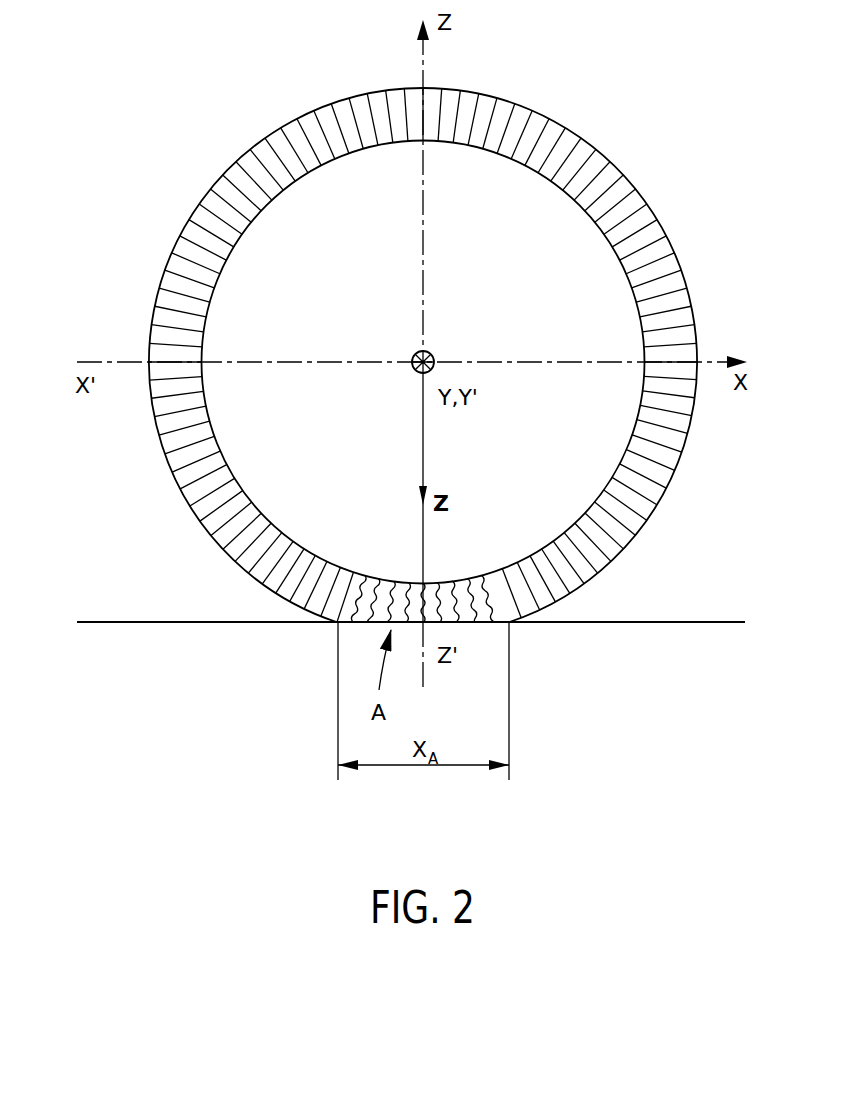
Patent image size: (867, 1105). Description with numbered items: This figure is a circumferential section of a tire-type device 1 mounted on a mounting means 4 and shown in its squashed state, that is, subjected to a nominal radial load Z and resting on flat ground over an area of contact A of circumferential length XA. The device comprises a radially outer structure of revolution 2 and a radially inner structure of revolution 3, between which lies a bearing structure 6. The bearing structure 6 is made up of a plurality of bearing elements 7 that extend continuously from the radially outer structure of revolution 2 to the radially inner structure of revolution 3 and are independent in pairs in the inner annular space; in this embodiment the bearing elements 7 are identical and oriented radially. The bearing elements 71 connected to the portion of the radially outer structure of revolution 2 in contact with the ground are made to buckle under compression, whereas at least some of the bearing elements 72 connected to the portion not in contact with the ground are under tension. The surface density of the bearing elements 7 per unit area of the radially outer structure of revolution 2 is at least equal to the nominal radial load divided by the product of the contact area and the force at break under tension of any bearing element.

The tire-type device 1 is at (173, 142).
The radially outer structure of revolution 2 is at (568, 127).
The radially inner structure of revolution 3 is at (585, 212).
The mounting means 4 is at (282, 190).
The bearing structure 6 is at (658, 468).
The bearing elements 7 is at (592, 553).
The bearing elements connected to the ground-contact portion 71 is at (500, 608).
The bearing elements connected to the non-contact portion 72 is at (662, 272).